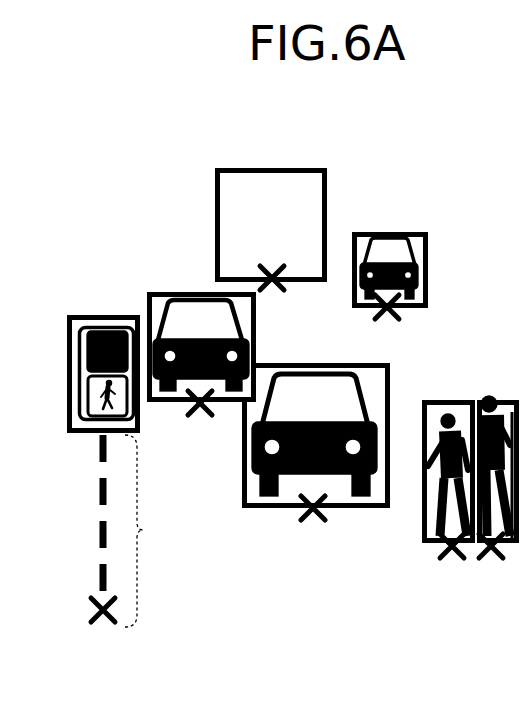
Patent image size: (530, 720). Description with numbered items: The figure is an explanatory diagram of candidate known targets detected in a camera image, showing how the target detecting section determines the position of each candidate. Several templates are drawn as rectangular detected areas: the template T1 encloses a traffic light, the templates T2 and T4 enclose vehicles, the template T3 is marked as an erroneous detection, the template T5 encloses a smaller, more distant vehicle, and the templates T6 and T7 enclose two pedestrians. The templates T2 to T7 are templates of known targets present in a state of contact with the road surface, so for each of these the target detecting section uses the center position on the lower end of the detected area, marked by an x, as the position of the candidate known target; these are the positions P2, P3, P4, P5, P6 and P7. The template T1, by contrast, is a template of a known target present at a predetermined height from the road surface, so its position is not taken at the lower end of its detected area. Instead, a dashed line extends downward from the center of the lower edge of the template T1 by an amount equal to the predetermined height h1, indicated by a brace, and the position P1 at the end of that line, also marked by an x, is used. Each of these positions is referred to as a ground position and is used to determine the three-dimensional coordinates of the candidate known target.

The template T1 is at (102, 313).
The template T2 is at (175, 292).
The template T3 is at (268, 167).
The template T4 is at (316, 475).
The template T5 is at (390, 231).
The template T6 is at (440, 401).
The template T7 is at (508, 401).
The position P1 is at (105, 624).
The position P2 is at (198, 417).
The position P3 is at (274, 290).
The position P4 is at (316, 522).
The position P5 is at (385, 320).
The position P6 is at (452, 558).
The position P7 is at (493, 558).
The height h1 is at (139, 531).